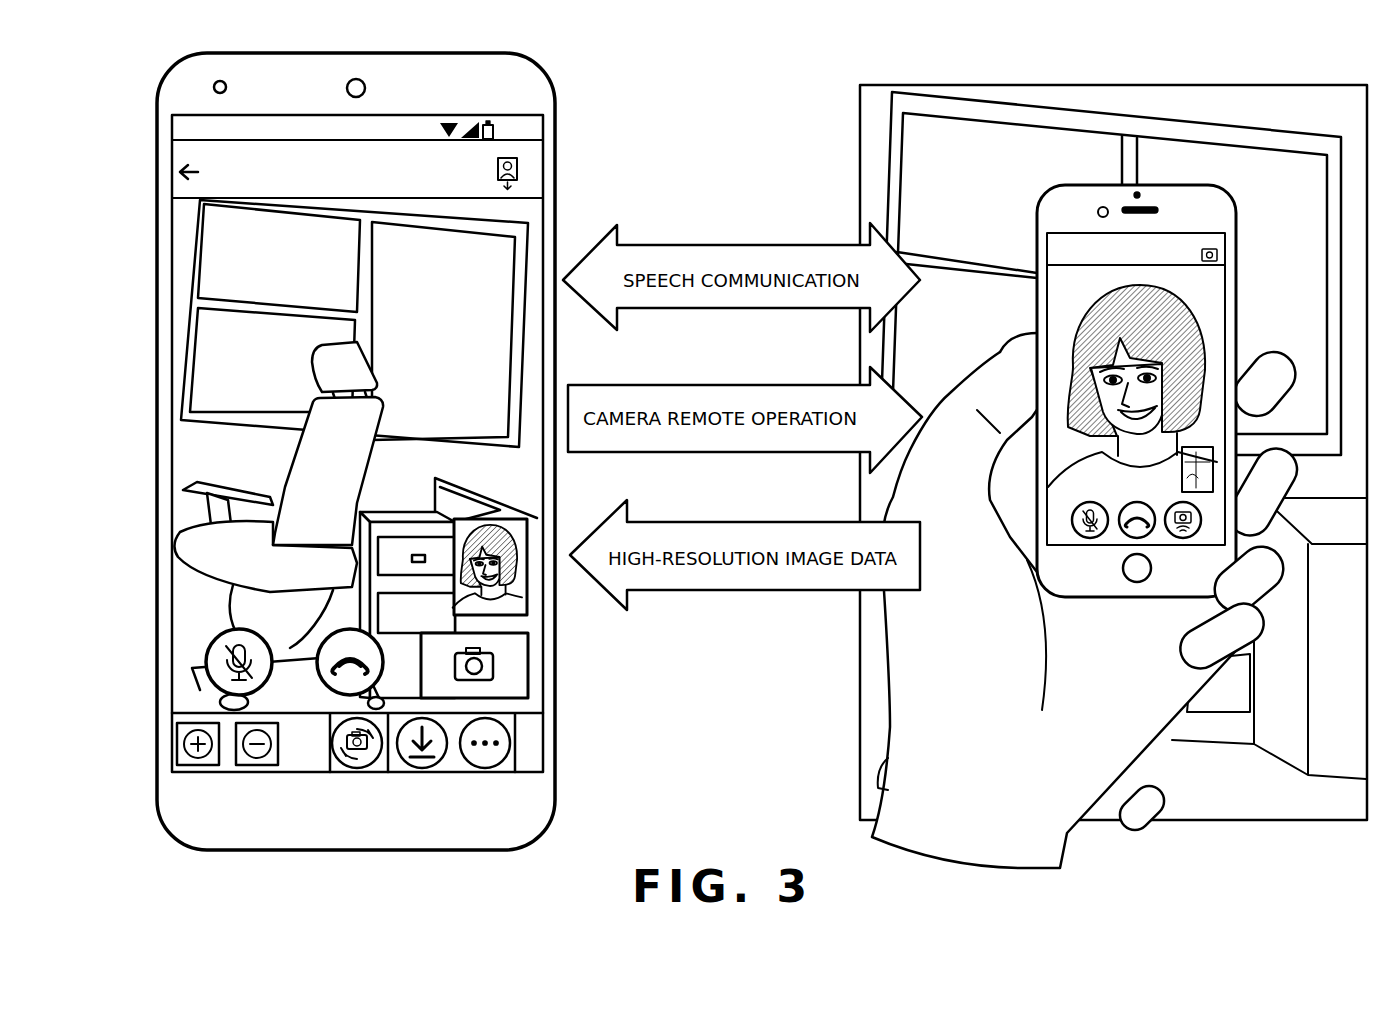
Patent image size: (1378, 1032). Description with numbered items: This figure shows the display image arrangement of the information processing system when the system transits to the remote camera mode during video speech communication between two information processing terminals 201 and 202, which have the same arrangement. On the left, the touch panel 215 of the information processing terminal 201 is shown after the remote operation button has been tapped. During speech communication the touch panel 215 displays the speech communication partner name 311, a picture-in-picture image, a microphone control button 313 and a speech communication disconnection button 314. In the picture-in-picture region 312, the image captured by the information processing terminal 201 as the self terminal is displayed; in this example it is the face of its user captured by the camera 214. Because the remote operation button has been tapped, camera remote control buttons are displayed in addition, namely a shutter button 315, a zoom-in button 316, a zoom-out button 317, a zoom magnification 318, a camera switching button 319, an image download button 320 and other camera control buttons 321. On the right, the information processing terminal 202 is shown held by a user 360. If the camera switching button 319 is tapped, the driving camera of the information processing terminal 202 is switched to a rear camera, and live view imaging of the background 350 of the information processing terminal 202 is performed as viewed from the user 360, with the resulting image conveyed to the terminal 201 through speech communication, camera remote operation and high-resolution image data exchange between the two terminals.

The information processing terminal 201 is at (548, 90).
The information processing terminal 202 is at (1057, 202).
The camera 214 is at (228, 88).
The touch panel 215 is at (475, 270).
The speech communication partner name 311 is at (392, 157).
The picture-in-picture region 312 is at (440, 495).
The microphone control button 313 is at (230, 652).
The speech communication disconnection button 314 is at (348, 642).
The shutter button 315 is at (437, 648).
The zoom-in button 316 is at (198, 766).
The zoom-out button 317 is at (257, 766).
The zoom magnification 318 is at (312, 762).
The camera switching button 319 is at (378, 767).
The image download button 320 is at (436, 766).
The other camera control buttons 321 is at (498, 766).
The background 350 is at (860, 138).
The user 360 is at (903, 673).